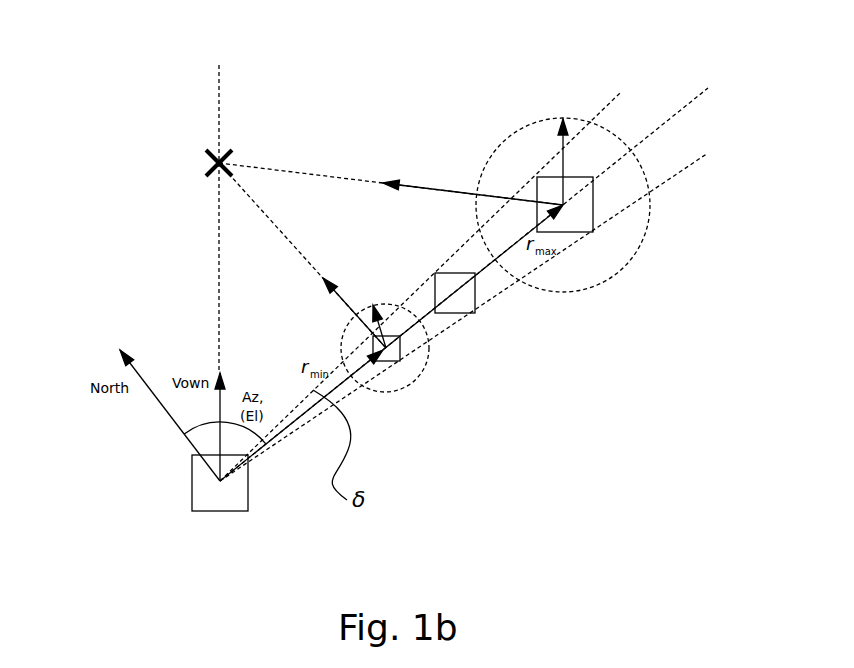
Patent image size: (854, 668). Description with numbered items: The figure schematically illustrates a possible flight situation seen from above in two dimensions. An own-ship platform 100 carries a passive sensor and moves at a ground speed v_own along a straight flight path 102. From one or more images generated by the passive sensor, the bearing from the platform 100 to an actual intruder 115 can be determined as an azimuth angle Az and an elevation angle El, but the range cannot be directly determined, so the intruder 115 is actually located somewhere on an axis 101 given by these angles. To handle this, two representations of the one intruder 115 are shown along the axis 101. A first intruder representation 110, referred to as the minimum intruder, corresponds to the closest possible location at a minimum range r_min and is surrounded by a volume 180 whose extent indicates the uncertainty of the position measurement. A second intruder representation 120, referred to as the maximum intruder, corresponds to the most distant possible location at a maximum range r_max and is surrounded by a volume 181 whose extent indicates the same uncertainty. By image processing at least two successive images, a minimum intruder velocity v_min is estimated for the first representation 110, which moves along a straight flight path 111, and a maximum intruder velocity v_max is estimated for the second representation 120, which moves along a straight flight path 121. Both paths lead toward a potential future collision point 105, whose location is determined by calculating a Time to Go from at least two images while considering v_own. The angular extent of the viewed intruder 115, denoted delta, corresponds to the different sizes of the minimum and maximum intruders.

The own-ship platform 100 is at (192, 490).
The axis 101 is at (702, 97).
The straight flight path 102 is at (218, 318).
The potential future collision point 105 is at (212, 158).
The first intruder representation 110 is at (390, 362).
The straight flight path 111 is at (292, 248).
The intruder 115 is at (475, 313).
The second intruder representation 120 is at (565, 233).
The straight flight path 121 is at (338, 180).
The volume 180 is at (362, 388).
The volume 181 is at (643, 245).